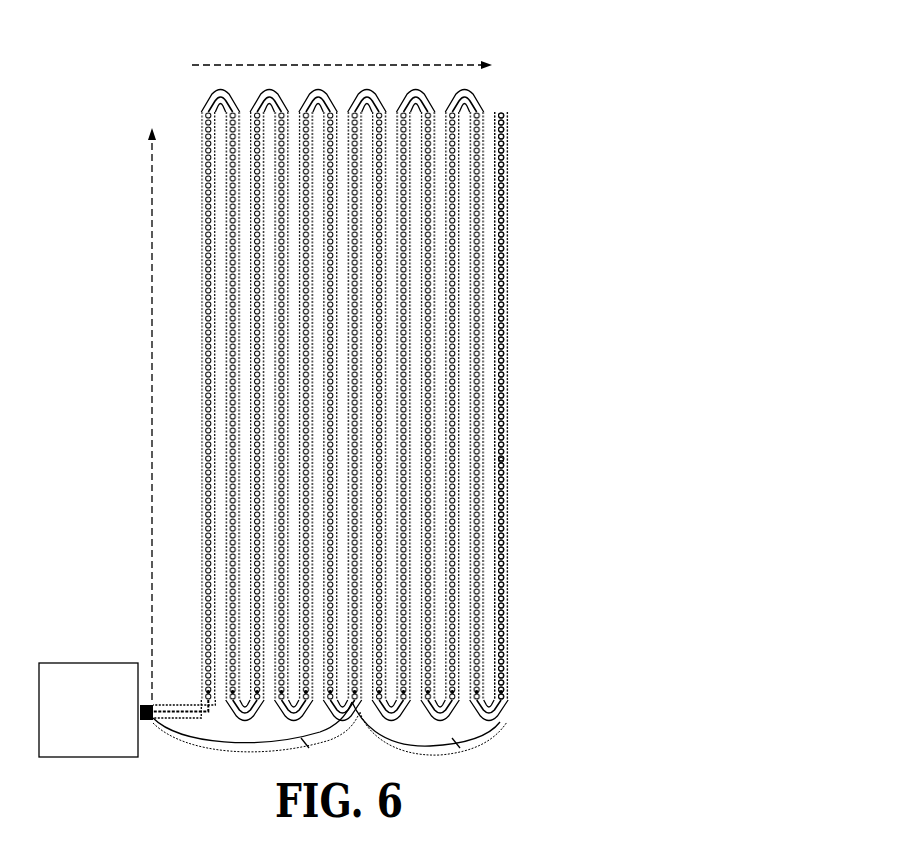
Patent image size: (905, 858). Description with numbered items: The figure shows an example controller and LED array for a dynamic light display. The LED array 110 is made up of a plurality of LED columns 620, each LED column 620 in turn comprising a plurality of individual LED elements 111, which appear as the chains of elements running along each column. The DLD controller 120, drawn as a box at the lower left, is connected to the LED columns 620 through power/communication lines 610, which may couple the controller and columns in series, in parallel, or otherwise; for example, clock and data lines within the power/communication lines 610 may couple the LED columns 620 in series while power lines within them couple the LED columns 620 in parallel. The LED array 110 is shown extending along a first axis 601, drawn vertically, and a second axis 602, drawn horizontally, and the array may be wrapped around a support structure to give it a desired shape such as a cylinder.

The LED array 110 is at (432, 397).
The LED element 111 is at (503, 462).
The DLD controller 120 is at (96, 710).
The first axis 601 is at (143, 414).
The second axis 602 is at (342, 55).
The power/communication lines 610 is at (509, 736).
The LED column 620 is at (501, 95).